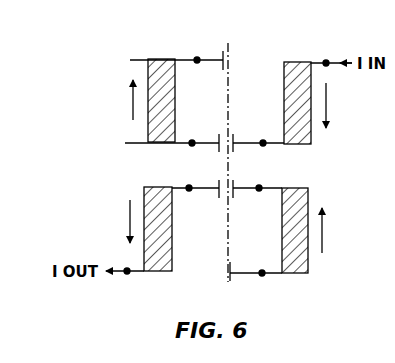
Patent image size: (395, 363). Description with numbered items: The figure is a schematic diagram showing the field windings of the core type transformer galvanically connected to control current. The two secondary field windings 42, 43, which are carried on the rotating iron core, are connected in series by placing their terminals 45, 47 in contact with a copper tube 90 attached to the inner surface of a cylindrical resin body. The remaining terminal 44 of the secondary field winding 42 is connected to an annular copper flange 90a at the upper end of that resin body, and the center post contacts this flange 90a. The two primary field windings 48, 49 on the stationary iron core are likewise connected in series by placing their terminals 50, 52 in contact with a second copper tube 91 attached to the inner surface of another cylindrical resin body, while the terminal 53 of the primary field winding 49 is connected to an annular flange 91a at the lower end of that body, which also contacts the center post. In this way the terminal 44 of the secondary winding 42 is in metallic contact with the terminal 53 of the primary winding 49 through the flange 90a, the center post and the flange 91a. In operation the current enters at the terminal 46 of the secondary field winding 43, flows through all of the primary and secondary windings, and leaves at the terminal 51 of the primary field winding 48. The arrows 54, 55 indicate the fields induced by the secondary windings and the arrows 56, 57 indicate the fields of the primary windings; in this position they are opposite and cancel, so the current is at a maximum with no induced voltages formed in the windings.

The secondary field winding 42 is at (163, 72).
The secondary field winding 43 is at (305, 130).
The terminal 44 is at (197, 58).
The terminal 45 is at (192, 141).
The terminal 46 is at (326, 61).
The terminal 47 is at (262, 141).
The primary field winding 48 is at (152, 196).
The primary field winding 49 is at (306, 262).
The terminal 50 is at (189, 186).
The terminal 51 is at (128, 273).
The terminal 52 is at (259, 186).
The terminal 53 is at (262, 271).
The arrow 54 is at (133, 98).
The arrow 55 is at (327, 108).
The arrow 56 is at (130, 232).
The arrow 57 is at (323, 230).
The tube 90 is at (233, 134).
The annular flange 90a is at (221, 64).
The tube 91 is at (233, 191).
The annular flange 91a is at (231, 279).